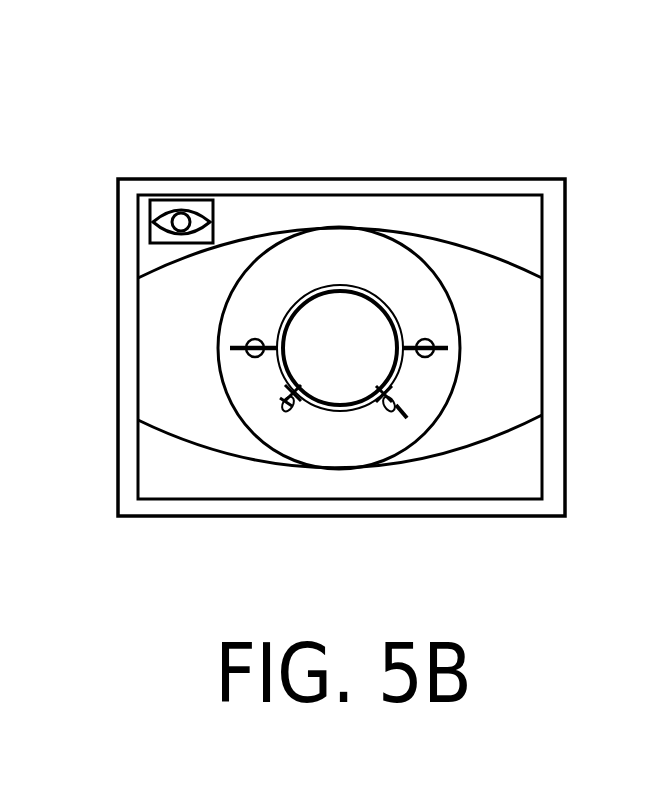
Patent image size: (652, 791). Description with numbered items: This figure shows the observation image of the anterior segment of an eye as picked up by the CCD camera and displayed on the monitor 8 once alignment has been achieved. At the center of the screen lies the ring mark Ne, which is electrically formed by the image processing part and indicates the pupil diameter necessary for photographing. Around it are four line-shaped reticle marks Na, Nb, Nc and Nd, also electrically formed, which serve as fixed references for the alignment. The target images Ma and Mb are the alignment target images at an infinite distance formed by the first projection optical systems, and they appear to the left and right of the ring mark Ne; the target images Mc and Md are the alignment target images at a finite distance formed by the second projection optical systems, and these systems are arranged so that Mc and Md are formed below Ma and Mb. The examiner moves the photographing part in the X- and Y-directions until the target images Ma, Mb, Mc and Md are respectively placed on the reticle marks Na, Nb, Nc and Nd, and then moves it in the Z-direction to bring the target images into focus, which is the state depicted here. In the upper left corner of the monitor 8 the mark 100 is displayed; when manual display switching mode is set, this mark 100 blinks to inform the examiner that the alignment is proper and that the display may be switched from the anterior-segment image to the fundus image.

The mark 100 is at (180, 198).
The monitor 8 is at (530, 180).
The ring mark Ne is at (340, 285).
The target image Ma is at (250, 340).
The target image Mb is at (425, 340).
The target image Mc is at (295, 407).
The target image Md is at (392, 400).
The reticle mark Na is at (230, 350).
The reticle mark Nb is at (448, 352).
The reticle mark Nc is at (293, 403).
The reticle mark Nd is at (398, 400).